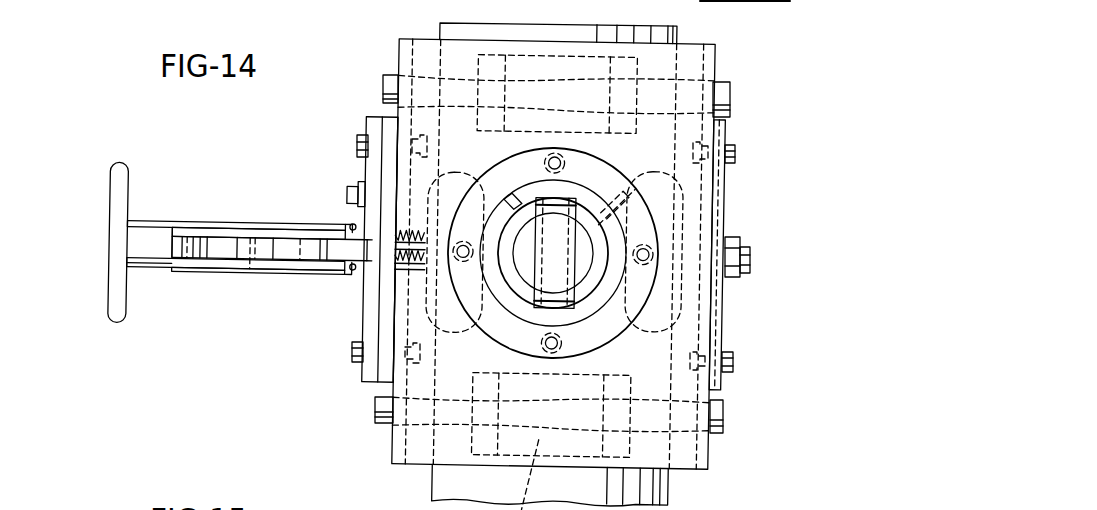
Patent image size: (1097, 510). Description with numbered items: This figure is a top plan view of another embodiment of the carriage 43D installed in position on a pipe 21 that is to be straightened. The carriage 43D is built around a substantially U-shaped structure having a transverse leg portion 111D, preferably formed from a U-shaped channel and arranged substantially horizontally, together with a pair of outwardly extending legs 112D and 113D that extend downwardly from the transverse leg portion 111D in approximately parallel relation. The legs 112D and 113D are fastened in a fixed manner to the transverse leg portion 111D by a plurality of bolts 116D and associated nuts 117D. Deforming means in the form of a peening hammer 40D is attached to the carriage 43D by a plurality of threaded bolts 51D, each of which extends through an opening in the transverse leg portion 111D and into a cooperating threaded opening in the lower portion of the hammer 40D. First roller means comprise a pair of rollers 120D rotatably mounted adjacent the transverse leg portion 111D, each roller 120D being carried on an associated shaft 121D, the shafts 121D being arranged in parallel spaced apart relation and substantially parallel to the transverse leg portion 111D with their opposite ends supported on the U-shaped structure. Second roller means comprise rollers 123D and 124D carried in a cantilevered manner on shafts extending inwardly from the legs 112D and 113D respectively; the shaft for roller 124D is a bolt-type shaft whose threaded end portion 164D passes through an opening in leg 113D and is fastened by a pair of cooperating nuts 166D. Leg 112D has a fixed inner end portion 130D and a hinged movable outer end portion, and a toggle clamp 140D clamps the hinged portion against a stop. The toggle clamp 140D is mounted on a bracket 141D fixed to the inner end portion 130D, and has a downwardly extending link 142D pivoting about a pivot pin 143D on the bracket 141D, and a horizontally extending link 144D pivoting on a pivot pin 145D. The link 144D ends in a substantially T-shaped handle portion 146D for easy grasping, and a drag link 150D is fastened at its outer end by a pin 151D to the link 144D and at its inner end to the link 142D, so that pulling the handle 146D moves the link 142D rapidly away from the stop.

The pipe 21 is at (438, 483).
The peening hammer 40D is at (560, 274).
The carriage 43D is at (278, 125).
The threaded bolt 51D is at (562, 165).
The transverse leg portion 111D is at (687, 453).
The outwardly extending leg 112D is at (369, 388).
The outwardly extending leg 113D is at (723, 313).
The bolt 116D is at (362, 145).
The nut 117D is at (418, 142).
The roller 120D is at (630, 71).
The shaft 121D is at (390, 78).
The roller 123D is at (430, 182).
The roller 124D is at (667, 210).
The fixed inner end portion 130D is at (373, 323).
The toggle clamp 140D is at (80, 203).
The bracket 141D is at (297, 238).
The downwardly extending link 142D is at (233, 247).
The pivot pin 143D is at (252, 268).
The horizontally extending link 144D is at (153, 271).
The pivot pin 145D is at (317, 250).
The T-shaped handle portion 146D is at (117, 247).
The drag link 150D is at (167, 257).
The pin 151D is at (201, 250).
The threaded end portion 164D is at (746, 256).
The nut 166D is at (735, 241).